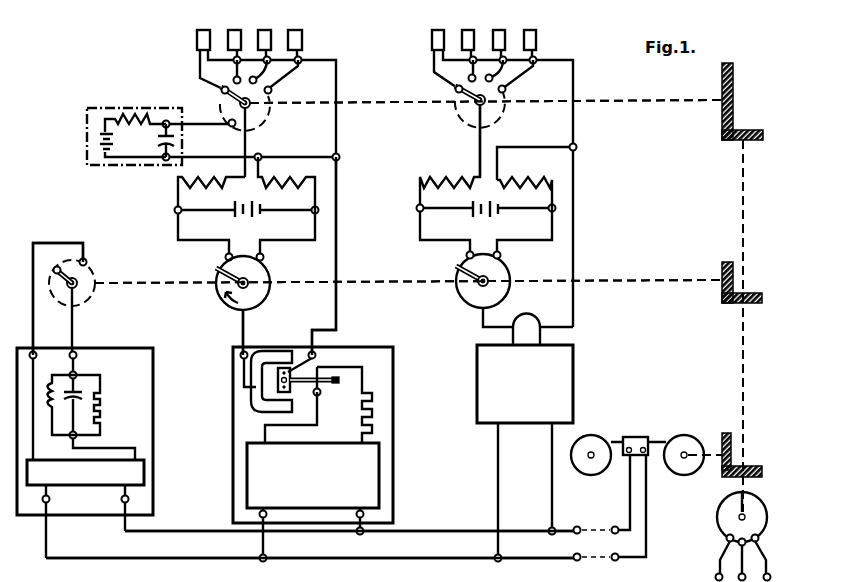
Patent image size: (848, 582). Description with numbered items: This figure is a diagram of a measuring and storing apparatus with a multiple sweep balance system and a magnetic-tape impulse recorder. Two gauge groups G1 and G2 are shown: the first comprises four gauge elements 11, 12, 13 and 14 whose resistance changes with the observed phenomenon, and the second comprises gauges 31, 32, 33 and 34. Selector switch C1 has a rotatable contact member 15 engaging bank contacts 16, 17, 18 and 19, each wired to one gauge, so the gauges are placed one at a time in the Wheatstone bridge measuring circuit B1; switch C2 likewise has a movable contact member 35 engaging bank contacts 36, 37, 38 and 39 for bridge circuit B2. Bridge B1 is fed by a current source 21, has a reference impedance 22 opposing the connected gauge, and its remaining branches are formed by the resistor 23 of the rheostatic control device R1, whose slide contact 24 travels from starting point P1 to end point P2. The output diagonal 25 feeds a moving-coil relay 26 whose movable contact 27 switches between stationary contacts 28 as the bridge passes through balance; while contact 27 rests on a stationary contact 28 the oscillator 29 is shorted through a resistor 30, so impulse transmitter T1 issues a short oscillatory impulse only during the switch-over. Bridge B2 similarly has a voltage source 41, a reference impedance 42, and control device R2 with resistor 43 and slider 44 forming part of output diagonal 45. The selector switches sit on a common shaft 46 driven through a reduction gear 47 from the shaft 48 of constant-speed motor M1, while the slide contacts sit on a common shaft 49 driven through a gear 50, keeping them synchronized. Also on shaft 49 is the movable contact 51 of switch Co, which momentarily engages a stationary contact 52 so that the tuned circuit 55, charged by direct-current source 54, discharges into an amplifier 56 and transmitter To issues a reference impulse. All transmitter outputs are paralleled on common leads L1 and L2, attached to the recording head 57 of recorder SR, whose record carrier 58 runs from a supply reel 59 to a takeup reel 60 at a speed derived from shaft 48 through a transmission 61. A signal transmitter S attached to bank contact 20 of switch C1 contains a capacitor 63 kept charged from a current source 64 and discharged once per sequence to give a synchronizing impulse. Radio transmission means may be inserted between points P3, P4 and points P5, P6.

The gauge 11 is at (201, 26).
The gauge 12 is at (239, 26).
The gauge 13 is at (270, 26).
The gauge 14 is at (301, 26).
The rotatable contact member 15 is at (236, 108).
The bank contact 16 is at (222, 93).
The bank contact 17 is at (235, 80).
The bank contact 18 is at (255, 80).
The bank contact 19 is at (270, 92).
The bank contact 20 is at (232, 127).
The current source 21 is at (261, 220).
The reference impedance 22 is at (288, 166).
The resistor 23 is at (267, 296).
The slide contact 24 is at (236, 273).
The output diagonal 25 is at (305, 331).
The relay 26 is at (268, 408).
The movable contact 27 is at (341, 380).
The stationary contact 28 is at (338, 365).
The oscillator 29 is at (337, 443).
The resistor 30 is at (362, 425).
The gauge 31 is at (435, 26).
The gauge 32 is at (474, 26).
The gauge 33 is at (505, 26).
The gauge 34 is at (536, 26).
The movable contact member 35 is at (474, 106).
The bank contact 36 is at (456, 90).
The bank contact 37 is at (469, 79).
The bank contact 38 is at (492, 79).
The bank contact 39 is at (506, 91).
The source of constant voltage 41 is at (475, 213).
The reference impedance 42 is at (518, 162).
The resistor 43 is at (504, 289).
The slider 44 is at (473, 272).
The output diagonal 45 is at (540, 326).
The common shaft 46 is at (355, 102).
The reduction gear 47 is at (722, 133).
The motor shaft 48 is at (743, 362).
The common shaft 49 is at (386, 282).
The gear 50 is at (722, 303).
The movable contact 51 is at (61, 268).
The stationary contact 52 is at (88, 262).
The direct-current source 54 is at (105, 379).
The oscillation generator 55 is at (67, 376).
The amplifier 56 is at (67, 459).
The recording head 57 is at (652, 427).
The record carrier 58 is at (612, 439).
The supply reel 59 is at (596, 472).
The takeup reel 60 is at (679, 473).
The transmission 61 is at (722, 472).
The capacitor 63 is at (157, 139).
The current source 64 is at (93, 136).
The gauge group G1 is at (182, 49).
The gauge group G2 is at (573, 49).
The selector switch C1 is at (290, 129).
The selector switch C2 is at (530, 129).
The signal transmitter S is at (131, 101).
The measuring circuit B1 is at (214, 234).
The measuring circuit B2 is at (535, 237).
The rheostatic control device R1 is at (271, 274).
The rheostatic control device R2 is at (509, 271).
The starting point P1 is at (264, 257).
The end point P2 is at (226, 257).
The point P3 is at (581, 526).
The point P4 is at (581, 556).
The point P5 is at (619, 526).
The point P6 is at (619, 556).
The switch Co is at (90, 290).
The impulse transmitter To is at (150, 385).
The impulse transmitter T1 is at (393, 423).
The recording device SR is at (693, 430).
The motor M1 is at (767, 517).
The common lead L1 is at (455, 528).
The common lead L2 is at (455, 555).